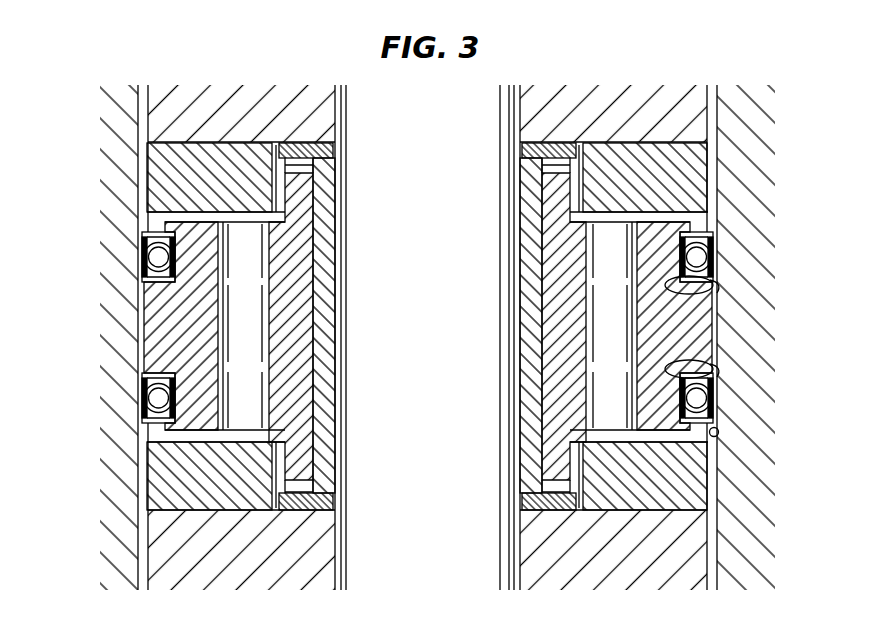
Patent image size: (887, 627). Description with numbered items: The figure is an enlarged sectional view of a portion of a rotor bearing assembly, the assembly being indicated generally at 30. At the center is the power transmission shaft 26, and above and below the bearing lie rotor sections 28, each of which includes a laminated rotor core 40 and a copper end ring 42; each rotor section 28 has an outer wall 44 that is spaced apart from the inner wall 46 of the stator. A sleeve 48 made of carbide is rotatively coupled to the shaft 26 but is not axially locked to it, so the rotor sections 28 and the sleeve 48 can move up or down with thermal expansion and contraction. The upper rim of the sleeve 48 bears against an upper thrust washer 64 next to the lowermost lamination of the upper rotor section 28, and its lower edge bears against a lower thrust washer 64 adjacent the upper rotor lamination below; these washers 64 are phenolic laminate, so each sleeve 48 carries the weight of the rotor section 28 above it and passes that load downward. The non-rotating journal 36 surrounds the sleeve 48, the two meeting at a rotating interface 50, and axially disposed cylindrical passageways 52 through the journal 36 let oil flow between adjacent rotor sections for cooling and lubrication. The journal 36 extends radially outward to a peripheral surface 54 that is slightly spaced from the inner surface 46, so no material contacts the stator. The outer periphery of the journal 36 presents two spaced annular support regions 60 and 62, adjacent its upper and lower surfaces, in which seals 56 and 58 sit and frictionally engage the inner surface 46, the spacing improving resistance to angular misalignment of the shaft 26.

The power transmission shaft 26 is at (414, 350).
The rotor section 28 is at (175, 141).
The roller assembly 30 is at (86, 260).
The journal 36 is at (163, 305).
The laminated rotor core 40 is at (692, 115).
The copper end ring 42 is at (673, 175).
The outer wall 44 is at (708, 555).
The inner wall 46 is at (719, 433).
The sleeve 48 is at (315, 323).
The rotating interface 50 is at (312, 452).
The cylindrical passageways 52 is at (598, 338).
The peripheral surface 54 is at (705, 325).
The seal 56 is at (718, 250).
The seal 58 is at (718, 400).
The circumferential support region 60 is at (722, 290).
The circumferential support region 62 is at (722, 372).
The thrust washer 64 is at (572, 500).